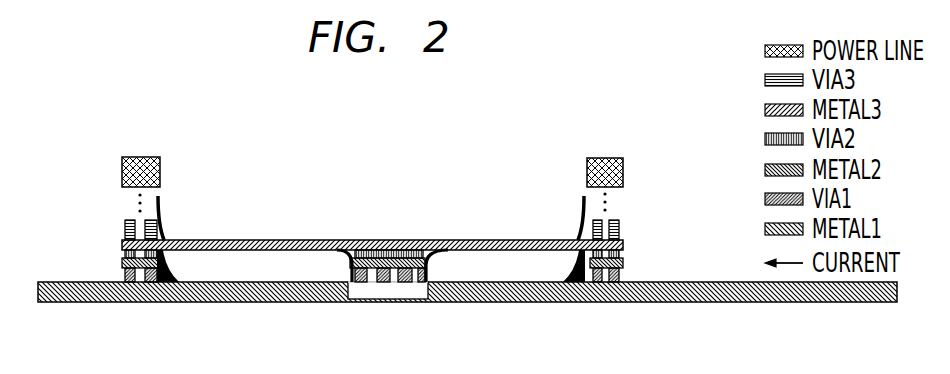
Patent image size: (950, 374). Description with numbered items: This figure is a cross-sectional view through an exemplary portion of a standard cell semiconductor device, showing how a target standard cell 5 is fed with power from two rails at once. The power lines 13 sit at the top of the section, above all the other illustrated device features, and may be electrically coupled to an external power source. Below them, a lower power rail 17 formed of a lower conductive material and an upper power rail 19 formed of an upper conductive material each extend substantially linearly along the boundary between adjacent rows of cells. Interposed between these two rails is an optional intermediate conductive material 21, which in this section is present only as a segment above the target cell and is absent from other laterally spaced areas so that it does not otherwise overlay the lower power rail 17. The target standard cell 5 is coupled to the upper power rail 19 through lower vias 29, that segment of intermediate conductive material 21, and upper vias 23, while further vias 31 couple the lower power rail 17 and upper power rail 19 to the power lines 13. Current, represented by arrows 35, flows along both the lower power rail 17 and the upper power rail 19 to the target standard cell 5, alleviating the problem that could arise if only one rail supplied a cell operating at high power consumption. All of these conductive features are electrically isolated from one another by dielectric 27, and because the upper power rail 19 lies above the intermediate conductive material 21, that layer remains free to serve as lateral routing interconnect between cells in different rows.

The target standard cell 5 is at (386, 303).
The power lines 13 is at (121, 167).
The lower power rail 17 is at (664, 296).
The upper power rail 19 is at (237, 240).
The intermediate conductive material 21 is at (372, 240).
The upper vias 23 is at (412, 240).
The dielectric 27 is at (239, 278).
The lower vias 29 is at (348, 272).
The vias 31 is at (620, 232).
The arrows 35 is at (164, 221).